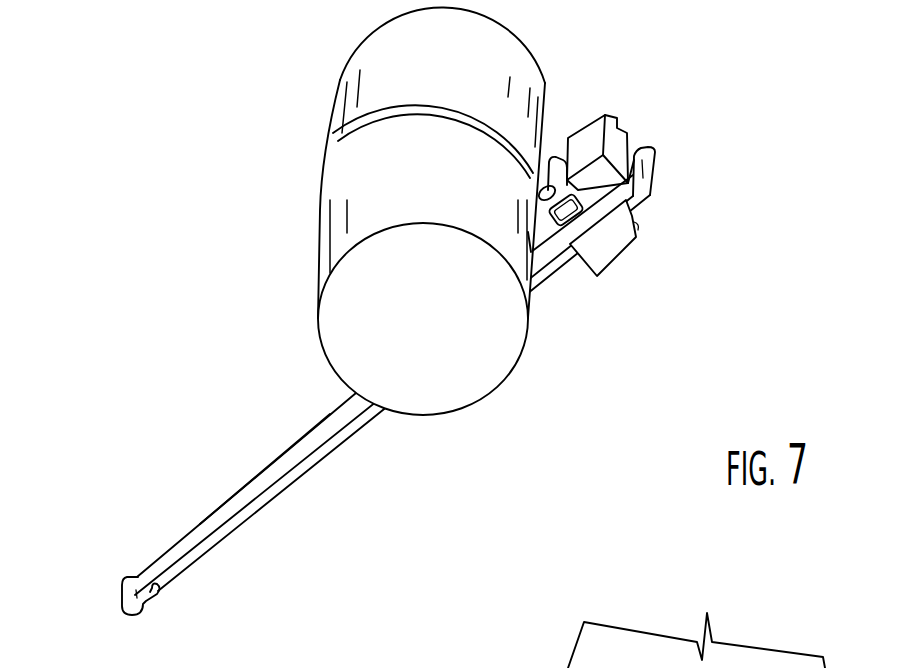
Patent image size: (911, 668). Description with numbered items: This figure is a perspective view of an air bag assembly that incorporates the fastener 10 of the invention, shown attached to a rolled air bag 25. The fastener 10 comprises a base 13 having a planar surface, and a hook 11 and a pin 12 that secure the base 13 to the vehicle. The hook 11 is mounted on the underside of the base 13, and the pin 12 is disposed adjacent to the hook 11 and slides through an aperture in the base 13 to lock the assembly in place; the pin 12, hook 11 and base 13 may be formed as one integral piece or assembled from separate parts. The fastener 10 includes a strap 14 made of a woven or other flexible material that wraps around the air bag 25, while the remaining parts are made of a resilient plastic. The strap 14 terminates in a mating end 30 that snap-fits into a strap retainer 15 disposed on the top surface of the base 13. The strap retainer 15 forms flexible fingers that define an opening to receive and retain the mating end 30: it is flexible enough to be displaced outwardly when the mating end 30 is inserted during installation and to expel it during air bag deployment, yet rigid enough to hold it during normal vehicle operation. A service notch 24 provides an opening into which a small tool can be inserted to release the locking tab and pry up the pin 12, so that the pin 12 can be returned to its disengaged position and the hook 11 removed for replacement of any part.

The fastener 10 is at (277, 491).
The hook 11 is at (616, 251).
The pin 12 is at (620, 156).
The base 13 is at (650, 157).
The strap 14 is at (200, 523).
The strap retainer 15 is at (556, 160).
The service notch 24 is at (622, 128).
The air bag 25 is at (337, 132).
The mating end 30 is at (130, 605).